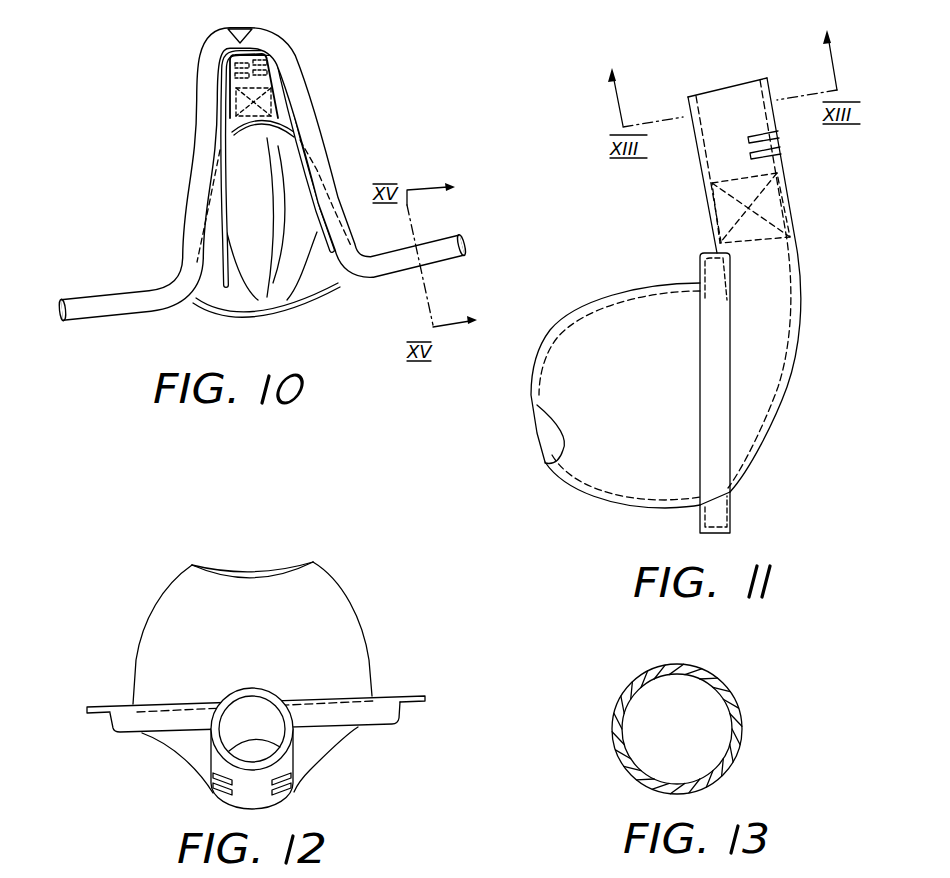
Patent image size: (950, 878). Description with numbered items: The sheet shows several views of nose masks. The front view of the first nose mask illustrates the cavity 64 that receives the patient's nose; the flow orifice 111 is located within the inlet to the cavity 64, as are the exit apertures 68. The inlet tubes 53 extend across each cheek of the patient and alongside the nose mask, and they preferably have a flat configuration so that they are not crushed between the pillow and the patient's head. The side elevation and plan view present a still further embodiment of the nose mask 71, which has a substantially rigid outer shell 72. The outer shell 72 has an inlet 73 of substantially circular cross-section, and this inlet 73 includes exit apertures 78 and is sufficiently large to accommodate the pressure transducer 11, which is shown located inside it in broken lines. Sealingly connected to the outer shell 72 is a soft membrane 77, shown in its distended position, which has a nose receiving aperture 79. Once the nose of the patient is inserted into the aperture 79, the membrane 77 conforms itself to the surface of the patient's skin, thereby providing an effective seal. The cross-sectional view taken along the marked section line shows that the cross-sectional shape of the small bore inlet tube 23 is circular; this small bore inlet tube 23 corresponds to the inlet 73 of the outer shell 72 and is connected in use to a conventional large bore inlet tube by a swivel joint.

In FIG. 10, the inlet tubes 53 is at (196, 78).
In FIG. 10, the cavity 64 is at (265, 205).
In FIG. 10, the exit apertures 68 is at (268, 66).
In FIG. 10, the flow orifice 111 is at (272, 100).
In FIG. 11, the inlet 73 is at (730, 103).
In FIG. 13, the inlet 73 is at (740, 710).
In FIG. 11, the exit apertures 78 is at (779, 145).
In FIG. 12, the exit apertures 78 is at (213, 787).
In FIG. 11, the pressure transducer 11 is at (780, 217).
In FIG. 11, the outer shell 72 is at (788, 386).
In FIG. 12, the outer shell 72 is at (313, 750).
In FIG. 11, the nose receiving aperture 79 is at (550, 442).
In FIG. 12, the nose receiving aperture 79 is at (242, 576).
In FIG. 11, the soft membrane 77 is at (623, 462).
In FIG. 12, the soft membrane 77 is at (280, 603).
In FIG. 12, the nose mask 71 is at (246, 660).
In FIG. 13, the small bore inlet tube 23 is at (731, 728).